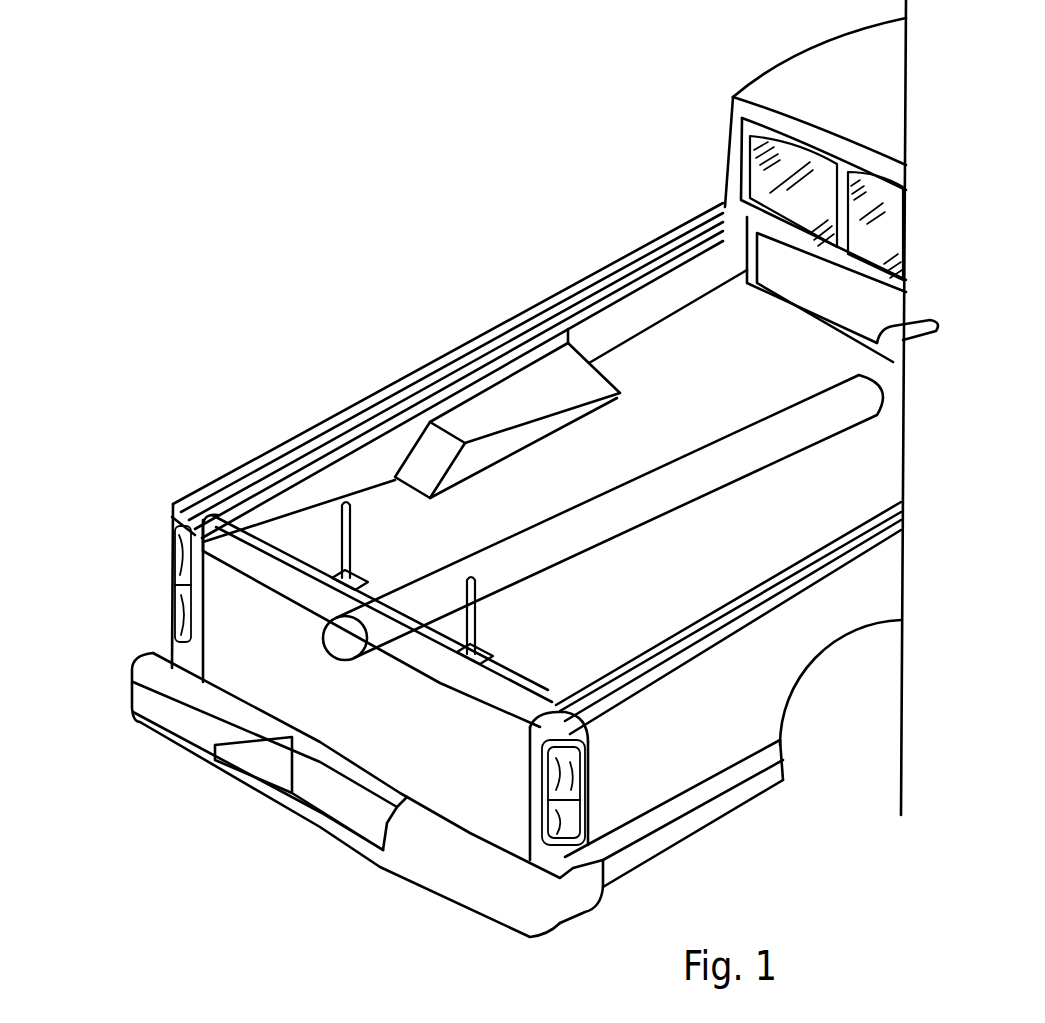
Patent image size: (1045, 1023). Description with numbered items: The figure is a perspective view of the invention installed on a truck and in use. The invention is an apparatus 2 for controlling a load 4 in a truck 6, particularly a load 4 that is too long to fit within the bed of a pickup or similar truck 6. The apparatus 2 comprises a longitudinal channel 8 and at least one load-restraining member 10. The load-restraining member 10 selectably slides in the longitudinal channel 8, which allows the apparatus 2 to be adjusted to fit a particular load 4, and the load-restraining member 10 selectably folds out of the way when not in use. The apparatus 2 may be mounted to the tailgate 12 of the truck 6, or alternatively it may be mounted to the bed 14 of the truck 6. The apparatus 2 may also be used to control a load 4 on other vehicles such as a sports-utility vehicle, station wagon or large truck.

The apparatus 2 is at (101, 558).
The load 4 is at (556, 570).
The truck 6 is at (729, 131).
The longitudinal channel 8 is at (250, 525).
The load-restraining member 10 is at (340, 578).
The tailgate 12 is at (317, 688).
The bed 14 is at (462, 354).